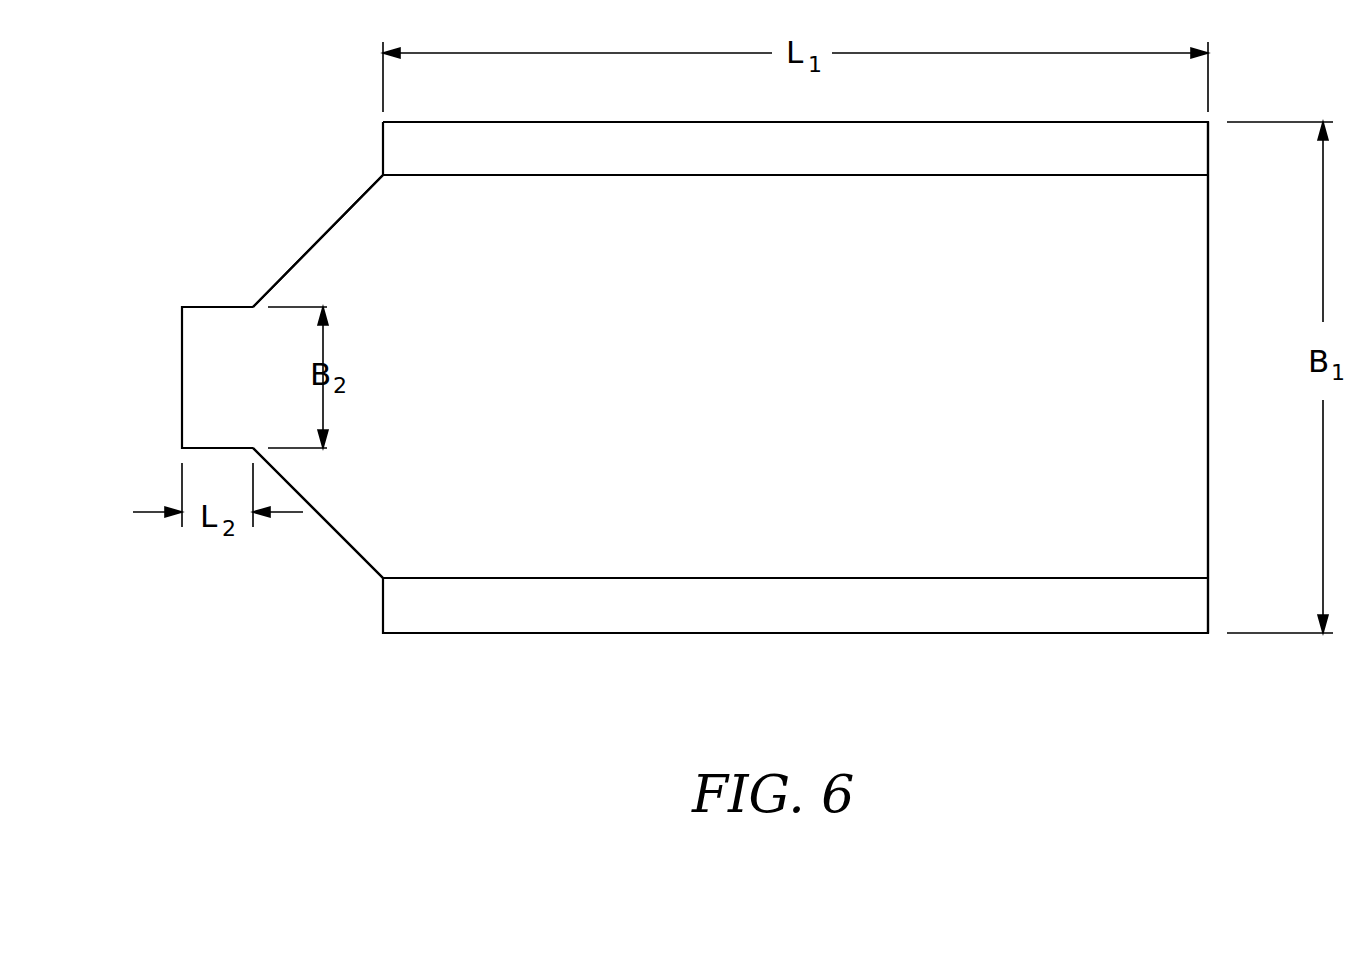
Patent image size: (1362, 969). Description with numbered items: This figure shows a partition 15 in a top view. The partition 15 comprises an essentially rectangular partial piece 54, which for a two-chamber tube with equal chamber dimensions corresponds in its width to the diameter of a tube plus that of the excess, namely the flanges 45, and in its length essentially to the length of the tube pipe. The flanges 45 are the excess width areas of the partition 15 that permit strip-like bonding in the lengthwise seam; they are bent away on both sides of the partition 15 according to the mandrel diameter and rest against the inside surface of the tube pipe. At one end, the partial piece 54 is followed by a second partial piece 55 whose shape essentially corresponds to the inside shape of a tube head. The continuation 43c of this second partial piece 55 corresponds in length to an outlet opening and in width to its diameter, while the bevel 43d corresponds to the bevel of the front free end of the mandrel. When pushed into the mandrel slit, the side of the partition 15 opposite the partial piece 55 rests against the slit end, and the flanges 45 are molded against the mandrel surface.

The partition 15 is at (401, 733).
The continuation 43c is at (199, 318).
The bevel 43d is at (317, 243).
The partial piece 54 is at (1192, 228).
The second partial piece 55 is at (368, 545).
The flanges 45 is at (1163, 618).